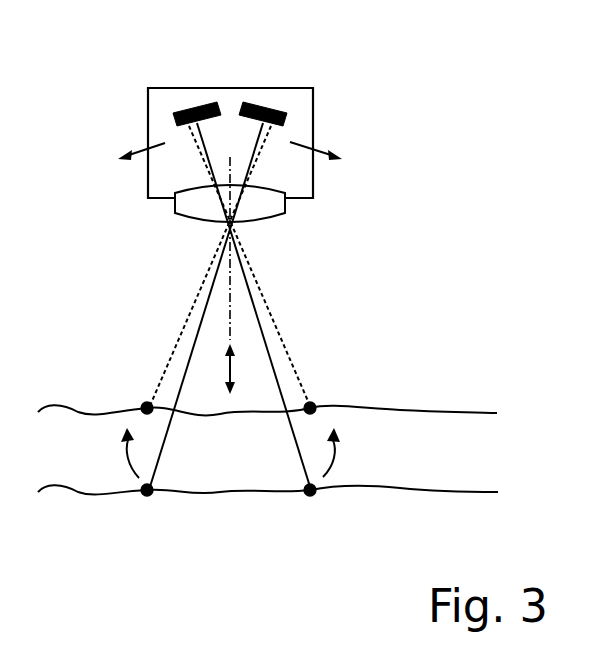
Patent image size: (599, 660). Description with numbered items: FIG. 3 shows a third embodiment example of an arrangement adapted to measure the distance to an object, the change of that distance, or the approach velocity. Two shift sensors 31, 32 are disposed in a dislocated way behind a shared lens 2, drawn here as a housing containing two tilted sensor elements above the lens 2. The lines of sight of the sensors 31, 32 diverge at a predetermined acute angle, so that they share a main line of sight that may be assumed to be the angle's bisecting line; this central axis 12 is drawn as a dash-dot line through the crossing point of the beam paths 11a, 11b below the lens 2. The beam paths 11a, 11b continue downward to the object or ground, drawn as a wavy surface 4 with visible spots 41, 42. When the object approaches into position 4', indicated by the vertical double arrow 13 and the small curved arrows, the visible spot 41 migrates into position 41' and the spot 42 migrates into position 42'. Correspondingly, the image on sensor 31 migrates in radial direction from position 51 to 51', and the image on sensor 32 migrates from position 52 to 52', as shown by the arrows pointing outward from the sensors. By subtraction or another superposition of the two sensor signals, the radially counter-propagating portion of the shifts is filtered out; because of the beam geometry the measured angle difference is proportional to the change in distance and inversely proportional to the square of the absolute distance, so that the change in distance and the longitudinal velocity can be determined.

The shared lens 2 is at (208, 218).
The optical axis 12 is at (228, 297).
The movement direction of focal point 13 is at (233, 372).
The shift sensor 31 is at (277, 110).
The shift sensor 32 is at (187, 113).
The image of spot on sensor 51 is at (246, 306).
The image of spot on sensor 52 is at (220, 306).
The shifted image position 51' is at (334, 139).
The shifted image position 52' is at (117, 132).
The first beam path 11a is at (184, 368).
The second beam path 11b is at (272, 349).
The workpiece surface 4 is at (269, 470).
The approached position of object or ground 4' is at (271, 388).
The visible spot 41 is at (127, 518).
The visible spot 42 is at (340, 515).
The migrated spot position 41' is at (115, 382).
The migrated spot position 42' is at (383, 374).